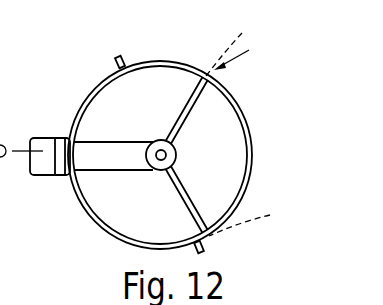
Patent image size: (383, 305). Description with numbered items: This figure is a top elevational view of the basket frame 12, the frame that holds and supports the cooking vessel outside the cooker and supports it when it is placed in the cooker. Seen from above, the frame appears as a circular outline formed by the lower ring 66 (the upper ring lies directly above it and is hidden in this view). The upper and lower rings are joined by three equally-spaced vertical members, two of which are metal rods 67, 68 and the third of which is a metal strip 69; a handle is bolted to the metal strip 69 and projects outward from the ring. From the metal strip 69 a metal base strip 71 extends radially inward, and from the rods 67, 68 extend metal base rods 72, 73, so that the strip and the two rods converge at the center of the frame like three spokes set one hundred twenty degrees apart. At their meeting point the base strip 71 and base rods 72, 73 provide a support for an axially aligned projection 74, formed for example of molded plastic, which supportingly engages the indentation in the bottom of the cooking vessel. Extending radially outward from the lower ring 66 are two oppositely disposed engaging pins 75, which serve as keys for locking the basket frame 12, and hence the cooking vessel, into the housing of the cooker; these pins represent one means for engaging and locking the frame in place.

The basket frame 12 is at (243, 55).
The lower ring 66 is at (152, 60).
The metal rod 67 is at (234, 47).
The metal rod 68 is at (254, 220).
The metal strip 69 is at (68, 140).
The metal base strip 71 is at (102, 162).
The metal base rod 72 is at (188, 95).
The metal base rod 73 is at (190, 200).
The axially aligned projection 74 is at (174, 152).
The engaging pins 75 is at (116, 61).